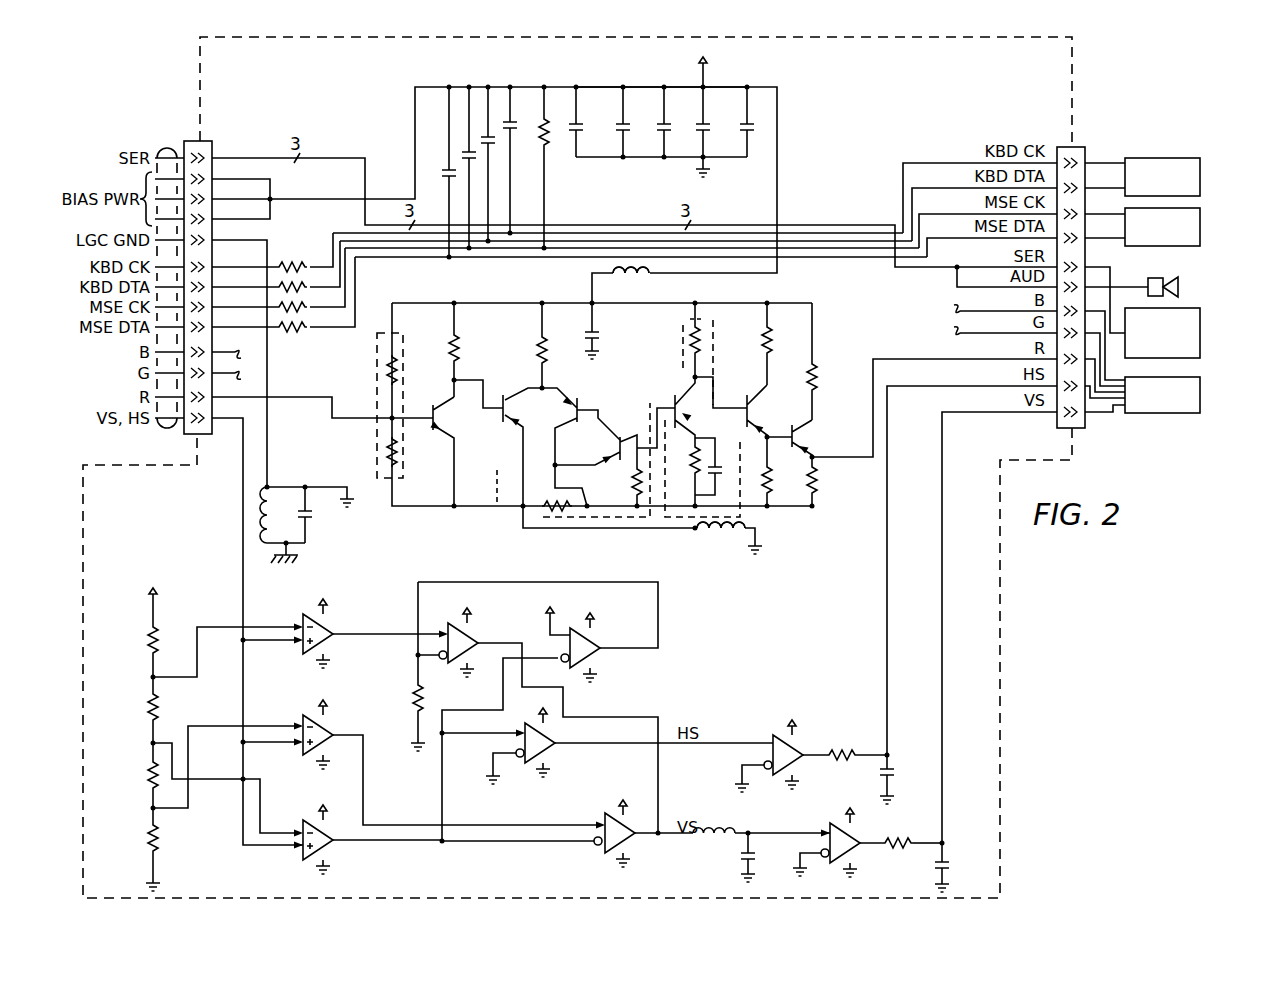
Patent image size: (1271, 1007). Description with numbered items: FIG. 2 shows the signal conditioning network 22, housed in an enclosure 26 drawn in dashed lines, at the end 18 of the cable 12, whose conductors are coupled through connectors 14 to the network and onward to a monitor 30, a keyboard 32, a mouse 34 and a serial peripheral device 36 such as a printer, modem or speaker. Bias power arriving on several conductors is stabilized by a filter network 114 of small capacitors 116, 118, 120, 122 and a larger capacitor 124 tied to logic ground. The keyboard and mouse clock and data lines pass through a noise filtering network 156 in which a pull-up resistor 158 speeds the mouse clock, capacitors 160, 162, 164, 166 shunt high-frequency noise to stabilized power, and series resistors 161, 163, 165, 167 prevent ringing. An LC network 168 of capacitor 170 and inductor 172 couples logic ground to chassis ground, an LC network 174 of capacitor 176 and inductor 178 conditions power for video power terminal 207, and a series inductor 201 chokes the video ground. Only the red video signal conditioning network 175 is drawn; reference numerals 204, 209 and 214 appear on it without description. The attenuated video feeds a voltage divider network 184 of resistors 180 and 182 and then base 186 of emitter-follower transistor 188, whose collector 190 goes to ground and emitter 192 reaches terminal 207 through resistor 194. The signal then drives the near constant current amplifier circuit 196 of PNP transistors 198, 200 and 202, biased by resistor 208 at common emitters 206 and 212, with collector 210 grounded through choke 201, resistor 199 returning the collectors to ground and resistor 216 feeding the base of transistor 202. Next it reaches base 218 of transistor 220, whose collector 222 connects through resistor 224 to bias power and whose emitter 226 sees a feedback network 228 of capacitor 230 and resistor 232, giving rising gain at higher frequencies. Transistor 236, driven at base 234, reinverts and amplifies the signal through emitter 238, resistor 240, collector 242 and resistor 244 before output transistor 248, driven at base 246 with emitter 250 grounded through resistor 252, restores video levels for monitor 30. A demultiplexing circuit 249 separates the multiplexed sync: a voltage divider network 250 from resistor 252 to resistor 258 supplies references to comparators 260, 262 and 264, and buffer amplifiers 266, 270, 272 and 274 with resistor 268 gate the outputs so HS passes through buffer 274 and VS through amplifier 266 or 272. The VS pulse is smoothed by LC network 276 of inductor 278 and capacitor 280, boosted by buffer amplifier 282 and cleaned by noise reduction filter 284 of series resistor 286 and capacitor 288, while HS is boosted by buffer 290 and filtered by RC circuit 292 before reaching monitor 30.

The cable 12 is at (160, 134).
The connectors 14 is at (213, 153).
The end of cable 18 is at (180, 106).
The signal conditioning network 22 is at (828, 130).
The enclosure 26 is at (1075, 118).
The monitor 30 is at (1190, 415).
The keyboard 32 is at (1153, 158).
The mouse 34 is at (1203, 232).
The serial peripheral device 36 is at (1176, 308).
The filter network 114 is at (680, 120).
The capacitor 116 is at (580, 124).
The capacitor 118 is at (626, 124).
The capacitor 120 is at (667, 124).
The capacitor 122 is at (706, 124).
The capacitor 124 is at (749, 122).
The noise filtering network 156 is at (540, 193).
The pull-up resistor 158 is at (547, 117).
The capacitor 160 is at (443, 172).
The series resistor 161 is at (295, 262).
The capacitor 162 is at (463, 152).
The series resistor 163 is at (310, 286).
The capacitor 164 is at (488, 136).
The series resistor 165 is at (312, 306).
The capacitor 166 is at (512, 120).
The series resistor 167 is at (305, 330).
The LC network 168 is at (330, 515).
The capacitor 170 is at (307, 492).
The inductor 172 is at (262, 518).
The LC network 174 is at (609, 300).
The video signal conditioning network 175 is at (836, 311).
The capacitor 176 is at (600, 332).
The inductor 178 is at (645, 276).
The resistor 180 is at (402, 362).
The resistor 182 is at (392, 468).
The voltage divider network 184 is at (373, 397).
The base 186 is at (426, 422).
The transistor 188 is at (452, 420).
The collector 190 is at (512, 430).
The emitter 192 is at (450, 396).
The resistor 194 is at (520, 325).
The amplifier circuit 196 is at (628, 370).
The PNP transistor 198 is at (546, 348).
The resistor 199 is at (563, 512).
The PNP transistor 200 is at (520, 407).
The inductor 201 is at (728, 535).
The PNP transistor 202 is at (608, 450).
The base connection 204 is at (500, 395).
The common emitter 206 is at (508, 393).
The video power terminal 207 is at (590, 302).
The resistor 208 is at (546, 345).
The ground rail 209 is at (520, 507).
The collector 210 is at (514, 483).
The common emitter 212 is at (582, 396).
The base 214 is at (596, 412).
The resistor 216 is at (630, 482).
The base 218 is at (682, 360).
The transistor 220 is at (686, 411).
The collector 222 is at (710, 378).
The resistor 224 is at (703, 358).
The emitter 226 is at (686, 474).
The frequency dependent degenerative feedback network 228 is at (705, 318).
The capacitor 230 is at (734, 469).
The resistor 232 is at (702, 468).
The base 234 is at (714, 405).
The transistor 236 is at (757, 419).
The emitter 238 is at (769, 380).
The resistor 240 is at (772, 345).
The collector 242 is at (714, 430).
The resistor 244 is at (790, 507).
The base 246 is at (809, 481).
The transistor 248 is at (805, 435).
The demultiplexing circuit 249 is at (360, 623).
The voltage divider network 250 is at (826, 458).
The resistor 252 is at (150, 641).
The resistor 258 is at (150, 844).
The comparator 260 is at (310, 616).
The comparator 262 is at (337, 728).
The comparator 264 is at (340, 852).
The buffer amplifier 266 is at (485, 628).
The resistor 268 is at (412, 692).
The buffer amplifier 270 is at (600, 656).
The buffer 272 is at (612, 814).
The buffer amplifier 274 is at (556, 752).
The LC network 276 is at (674, 880).
The inductor 278 is at (724, 831).
The capacitor 280 is at (756, 852).
The buffer amplifier 282 is at (838, 824).
The noise reduction filter 284 is at (894, 878).
The series resistor 286 is at (898, 838).
The capacitor 288 is at (952, 858).
The buffer 290 is at (778, 734).
The RC noise reduction circuit 292 is at (825, 738).